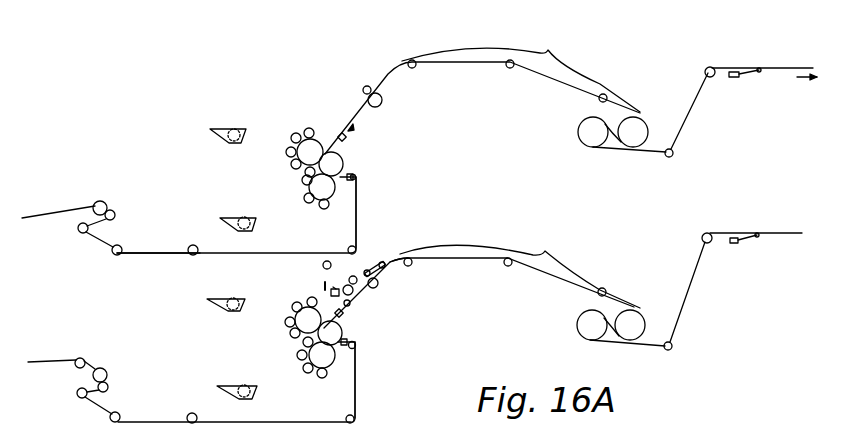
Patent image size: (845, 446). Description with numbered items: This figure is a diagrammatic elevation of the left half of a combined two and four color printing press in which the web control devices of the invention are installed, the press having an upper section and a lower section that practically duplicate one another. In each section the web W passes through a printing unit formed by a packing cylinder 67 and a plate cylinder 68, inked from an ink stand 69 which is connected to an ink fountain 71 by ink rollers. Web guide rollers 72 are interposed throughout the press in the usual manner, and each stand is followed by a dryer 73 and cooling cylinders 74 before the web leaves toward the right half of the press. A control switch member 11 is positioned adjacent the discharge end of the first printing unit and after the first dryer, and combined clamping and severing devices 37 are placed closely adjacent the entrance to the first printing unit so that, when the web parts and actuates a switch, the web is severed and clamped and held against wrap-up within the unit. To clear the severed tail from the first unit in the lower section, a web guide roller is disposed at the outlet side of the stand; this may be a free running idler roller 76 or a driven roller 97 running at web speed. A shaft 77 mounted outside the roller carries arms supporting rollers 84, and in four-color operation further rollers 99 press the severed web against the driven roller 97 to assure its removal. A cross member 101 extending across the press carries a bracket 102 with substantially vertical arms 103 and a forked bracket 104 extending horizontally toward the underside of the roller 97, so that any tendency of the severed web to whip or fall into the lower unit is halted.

The control switch member 11 is at (346, 134).
The combined clamping and severing device 37 is at (347, 168).
The packing cylinder 67 is at (337, 158).
The plate cylinder 68 is at (313, 150).
The ink stand 69 is at (292, 153).
The ink fountain 71 is at (247, 131).
The web guide roller 72 is at (103, 207).
The dryer 73 is at (520, 173).
The cooling cylinder 74 is at (637, 130).
The idler roller 76 is at (377, 286).
The shaft 77 is at (397, 255).
The roller 84 is at (368, 270).
The driven roller 97 is at (353, 292).
The roller 99 is at (340, 272).
The cross member 101 is at (333, 287).
The bracket 102 is at (330, 292).
The substantially vertical arm 103 is at (323, 286).
The forked bracket 104 is at (350, 305).
The web W is at (260, 255).